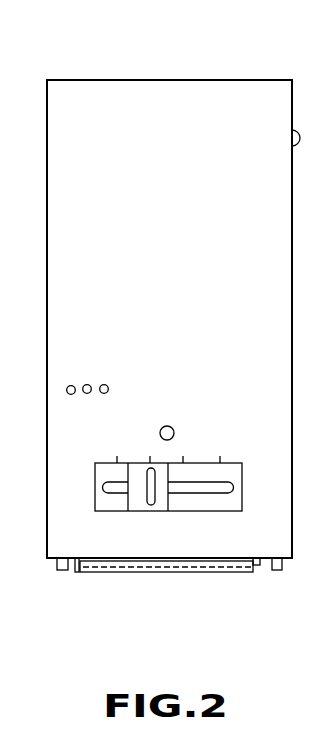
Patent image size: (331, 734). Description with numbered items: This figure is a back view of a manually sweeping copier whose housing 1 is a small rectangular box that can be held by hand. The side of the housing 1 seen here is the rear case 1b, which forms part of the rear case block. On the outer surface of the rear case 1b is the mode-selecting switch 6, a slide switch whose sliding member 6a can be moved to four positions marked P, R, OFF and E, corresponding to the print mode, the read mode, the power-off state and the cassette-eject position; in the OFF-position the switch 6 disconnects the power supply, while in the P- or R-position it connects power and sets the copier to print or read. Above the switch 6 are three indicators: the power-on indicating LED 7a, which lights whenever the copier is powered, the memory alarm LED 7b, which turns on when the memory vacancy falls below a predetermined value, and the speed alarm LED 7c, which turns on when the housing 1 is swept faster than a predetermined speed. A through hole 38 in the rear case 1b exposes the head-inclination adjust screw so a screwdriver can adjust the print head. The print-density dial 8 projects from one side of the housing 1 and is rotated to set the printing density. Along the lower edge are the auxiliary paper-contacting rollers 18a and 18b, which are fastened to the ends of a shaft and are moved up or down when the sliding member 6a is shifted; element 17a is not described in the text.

The housing 1 is at (222, 79).
The rear case 1b is at (281, 299).
The print-density dial 8 is at (298, 144).
The power-on indicating LED 7a is at (70, 385).
The memory alarm LED 7b is at (90, 385).
The speed alarm LED 7c is at (109, 387).
The through hole 38 is at (173, 428).
The mode-selecting switch 6 is at (128, 511).
The sliding member 6a is at (161, 509).
The auxiliary paper-contacting roller 18a is at (58, 571).
The leg 17a is at (77, 574).
The auxiliary paper-contacting roller 18b is at (278, 572).